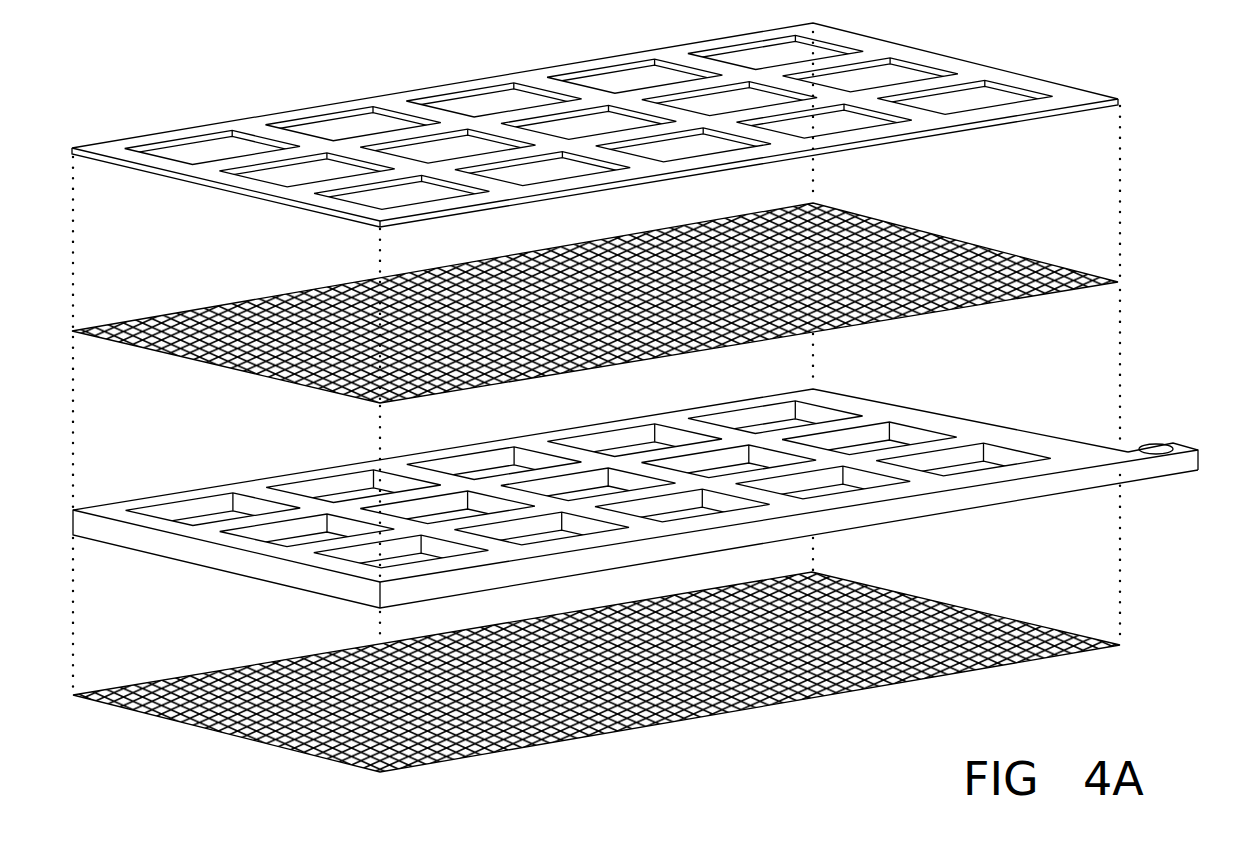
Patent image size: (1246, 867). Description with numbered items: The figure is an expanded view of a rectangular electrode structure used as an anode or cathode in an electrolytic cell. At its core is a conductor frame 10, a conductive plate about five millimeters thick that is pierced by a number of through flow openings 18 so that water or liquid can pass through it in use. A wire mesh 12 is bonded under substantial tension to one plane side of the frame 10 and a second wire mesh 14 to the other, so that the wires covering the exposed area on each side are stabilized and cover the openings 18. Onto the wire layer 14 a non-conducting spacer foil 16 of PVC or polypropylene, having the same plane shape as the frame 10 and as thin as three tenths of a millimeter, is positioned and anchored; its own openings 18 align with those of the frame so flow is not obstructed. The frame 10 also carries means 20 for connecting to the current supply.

The conductor frame 10 is at (652, 478).
The wire mesh 12 is at (1090, 650).
The wire mesh 14 is at (1073, 278).
The spacer foil 16 is at (1057, 88).
The through flow openings 18 is at (212, 515).
The means for connecting to current supply 20 is at (1128, 448).